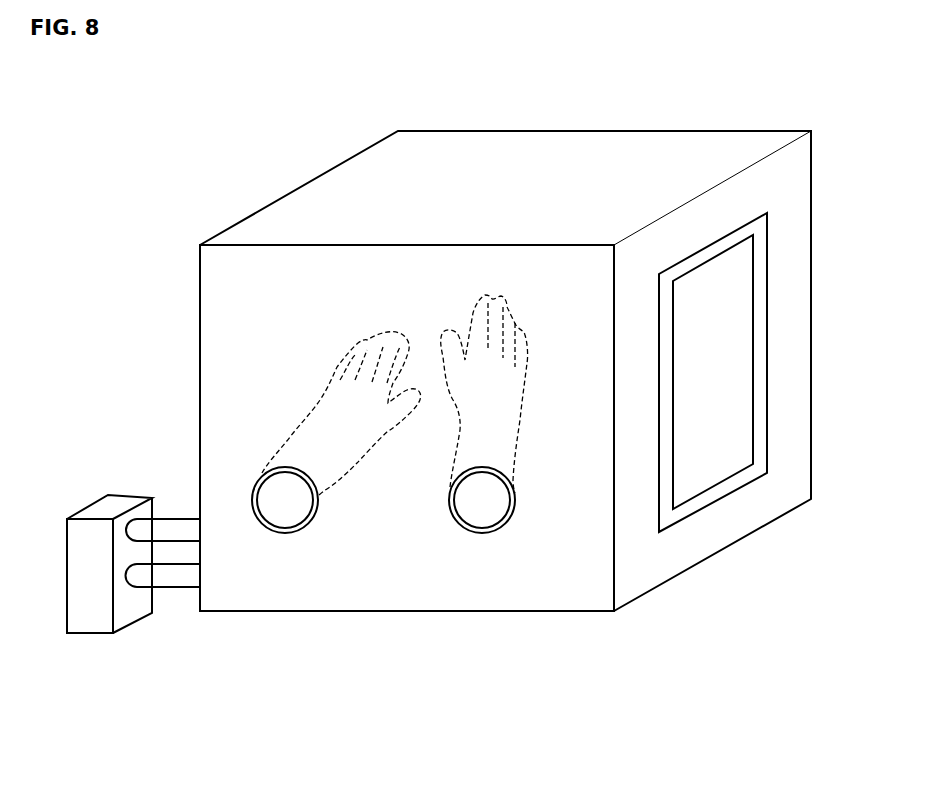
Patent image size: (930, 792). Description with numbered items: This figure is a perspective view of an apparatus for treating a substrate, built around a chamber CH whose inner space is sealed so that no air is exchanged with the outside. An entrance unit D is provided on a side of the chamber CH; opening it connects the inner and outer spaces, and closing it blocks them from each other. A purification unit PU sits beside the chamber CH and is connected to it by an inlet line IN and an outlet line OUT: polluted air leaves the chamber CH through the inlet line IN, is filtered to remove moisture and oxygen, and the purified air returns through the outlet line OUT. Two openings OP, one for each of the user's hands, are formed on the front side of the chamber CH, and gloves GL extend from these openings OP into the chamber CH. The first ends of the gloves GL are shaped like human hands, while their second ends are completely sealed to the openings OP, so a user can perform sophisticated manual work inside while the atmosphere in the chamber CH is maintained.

The chamber CH is at (580, 137).
The entrance unit D is at (727, 268).
The opening OP is at (285, 514).
The gloves GL is at (356, 465).
The purification unit PU is at (118, 503).
The inlet line IN is at (170, 520).
The outlet line OUT is at (170, 590).